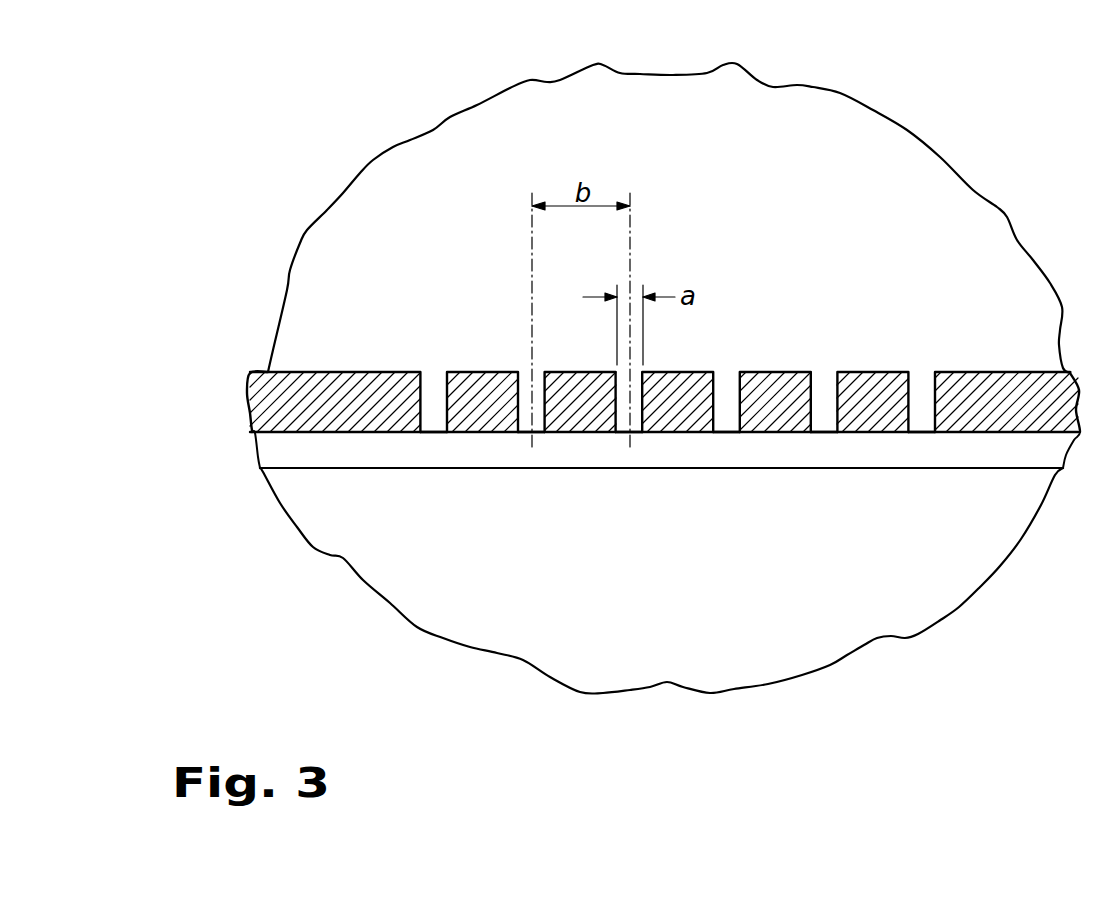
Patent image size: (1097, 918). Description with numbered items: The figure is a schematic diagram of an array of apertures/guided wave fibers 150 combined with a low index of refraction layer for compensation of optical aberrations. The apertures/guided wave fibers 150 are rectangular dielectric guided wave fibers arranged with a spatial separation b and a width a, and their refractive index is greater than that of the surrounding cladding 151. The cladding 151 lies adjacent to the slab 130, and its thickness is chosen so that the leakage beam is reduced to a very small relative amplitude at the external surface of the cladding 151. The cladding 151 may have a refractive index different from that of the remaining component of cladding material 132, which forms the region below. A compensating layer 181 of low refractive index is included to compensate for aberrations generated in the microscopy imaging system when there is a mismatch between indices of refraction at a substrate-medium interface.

The slab 130 is at (777, 138).
The cladding material 132 is at (777, 619).
The array of apertures/guided wave fibers 150 is at (523, 370).
The cladding 151 is at (348, 410).
The compensating layer 181 is at (729, 452).